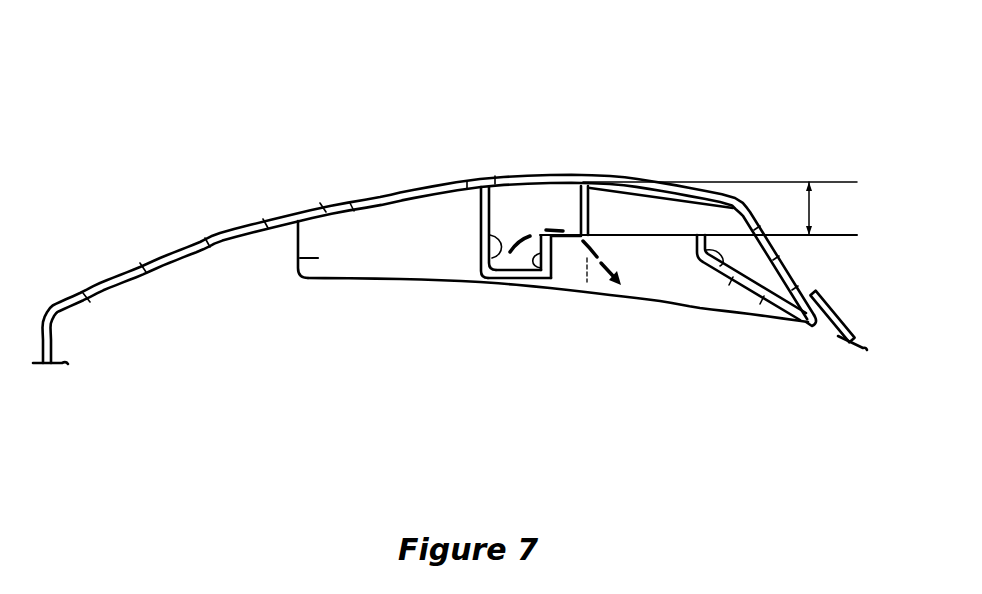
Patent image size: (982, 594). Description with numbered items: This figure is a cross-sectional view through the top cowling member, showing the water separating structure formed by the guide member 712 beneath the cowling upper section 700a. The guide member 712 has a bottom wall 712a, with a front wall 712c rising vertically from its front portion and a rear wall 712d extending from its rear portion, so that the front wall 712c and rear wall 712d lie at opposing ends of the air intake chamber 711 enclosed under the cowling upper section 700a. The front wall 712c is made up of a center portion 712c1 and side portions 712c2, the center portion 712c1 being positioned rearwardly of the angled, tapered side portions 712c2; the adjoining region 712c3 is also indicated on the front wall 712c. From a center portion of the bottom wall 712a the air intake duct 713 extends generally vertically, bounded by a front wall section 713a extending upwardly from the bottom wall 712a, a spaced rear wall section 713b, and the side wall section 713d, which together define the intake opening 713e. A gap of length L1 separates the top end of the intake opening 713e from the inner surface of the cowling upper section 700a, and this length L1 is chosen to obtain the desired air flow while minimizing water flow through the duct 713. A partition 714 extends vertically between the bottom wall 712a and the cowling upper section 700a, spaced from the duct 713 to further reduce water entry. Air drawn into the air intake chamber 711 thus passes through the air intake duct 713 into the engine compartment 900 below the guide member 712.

The cowling upper section 700a is at (497, 176).
The air intake chamber 711 is at (557, 223).
The guide member 712 is at (364, 287).
The bottom wall 712a is at (507, 273).
The front wall 712c is at (350, 207).
The center portion 712c1 is at (480, 262).
The side portions 712c2 is at (413, 200).
The step portion of inner panel 712c3 is at (297, 262).
The rear wall 712d is at (806, 286).
The air intake duct 713 is at (607, 248).
The front wall section 713a is at (548, 279).
The rear wall section 713b is at (740, 281).
The left side wall section 713d is at (578, 190).
The intake opening 713e is at (652, 258).
The partitions 714 is at (648, 205).
The engine compartment 900 is at (660, 382).
The length L1 is at (812, 203).